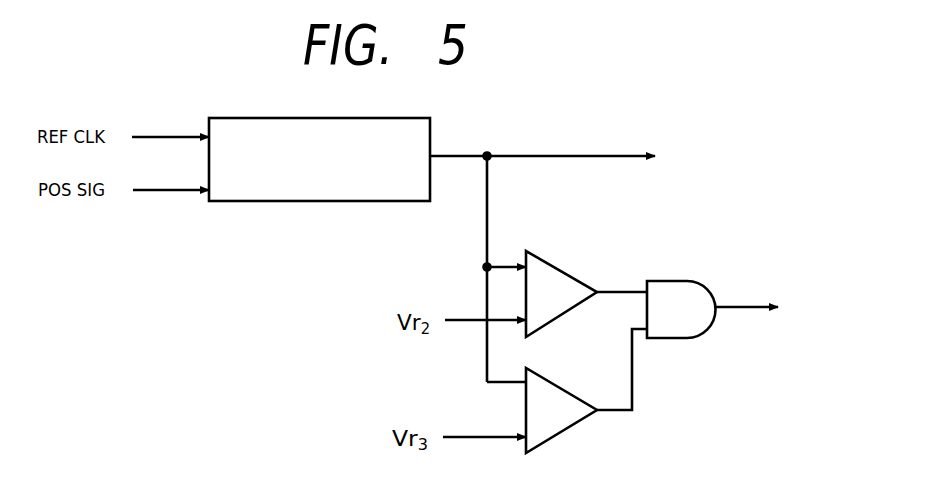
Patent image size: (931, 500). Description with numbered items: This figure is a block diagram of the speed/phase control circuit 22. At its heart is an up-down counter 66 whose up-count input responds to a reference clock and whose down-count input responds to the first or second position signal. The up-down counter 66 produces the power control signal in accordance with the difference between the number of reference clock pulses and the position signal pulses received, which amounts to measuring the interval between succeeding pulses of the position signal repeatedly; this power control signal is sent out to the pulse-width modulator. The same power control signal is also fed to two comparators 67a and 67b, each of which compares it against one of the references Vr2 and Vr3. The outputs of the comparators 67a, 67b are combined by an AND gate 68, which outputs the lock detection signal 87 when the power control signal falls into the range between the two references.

The up-down counter 66 is at (403, 115).
The speed/phase control circuit 22 is at (629, 124).
The comparator 67a is at (557, 264).
The comparator 67b is at (582, 372).
The AND gate 68 is at (690, 338).
The lock detect signal 87 is at (740, 302).